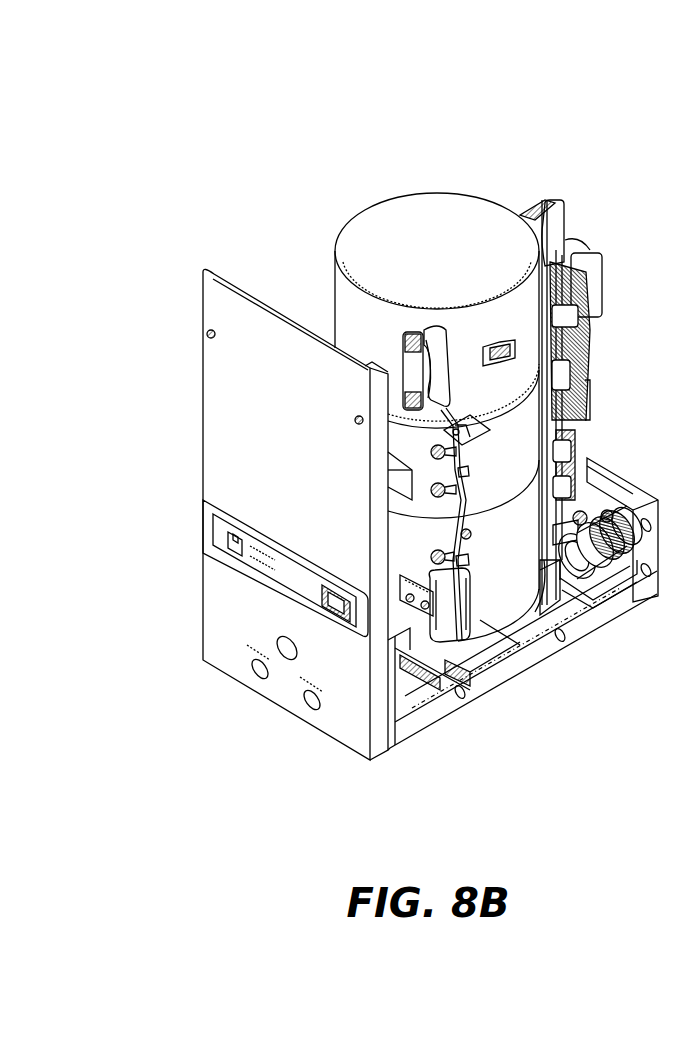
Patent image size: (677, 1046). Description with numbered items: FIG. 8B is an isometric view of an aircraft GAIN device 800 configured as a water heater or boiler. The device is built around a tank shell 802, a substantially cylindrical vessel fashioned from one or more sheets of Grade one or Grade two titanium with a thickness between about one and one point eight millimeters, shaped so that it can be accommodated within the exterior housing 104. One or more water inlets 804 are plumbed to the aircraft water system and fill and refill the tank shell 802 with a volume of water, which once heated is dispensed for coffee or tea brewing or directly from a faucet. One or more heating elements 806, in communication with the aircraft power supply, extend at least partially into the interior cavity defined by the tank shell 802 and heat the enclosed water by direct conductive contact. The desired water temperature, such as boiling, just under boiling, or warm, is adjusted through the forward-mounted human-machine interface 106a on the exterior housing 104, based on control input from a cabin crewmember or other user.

The aircraft GAIN device 800 is at (161, 77).
The exterior housing 104 is at (295, 378).
The human-machine interface 106a is at (290, 582).
The tank shell 802 is at (413, 240).
The water inlet 804 is at (583, 405).
The heating element 806 is at (517, 620).